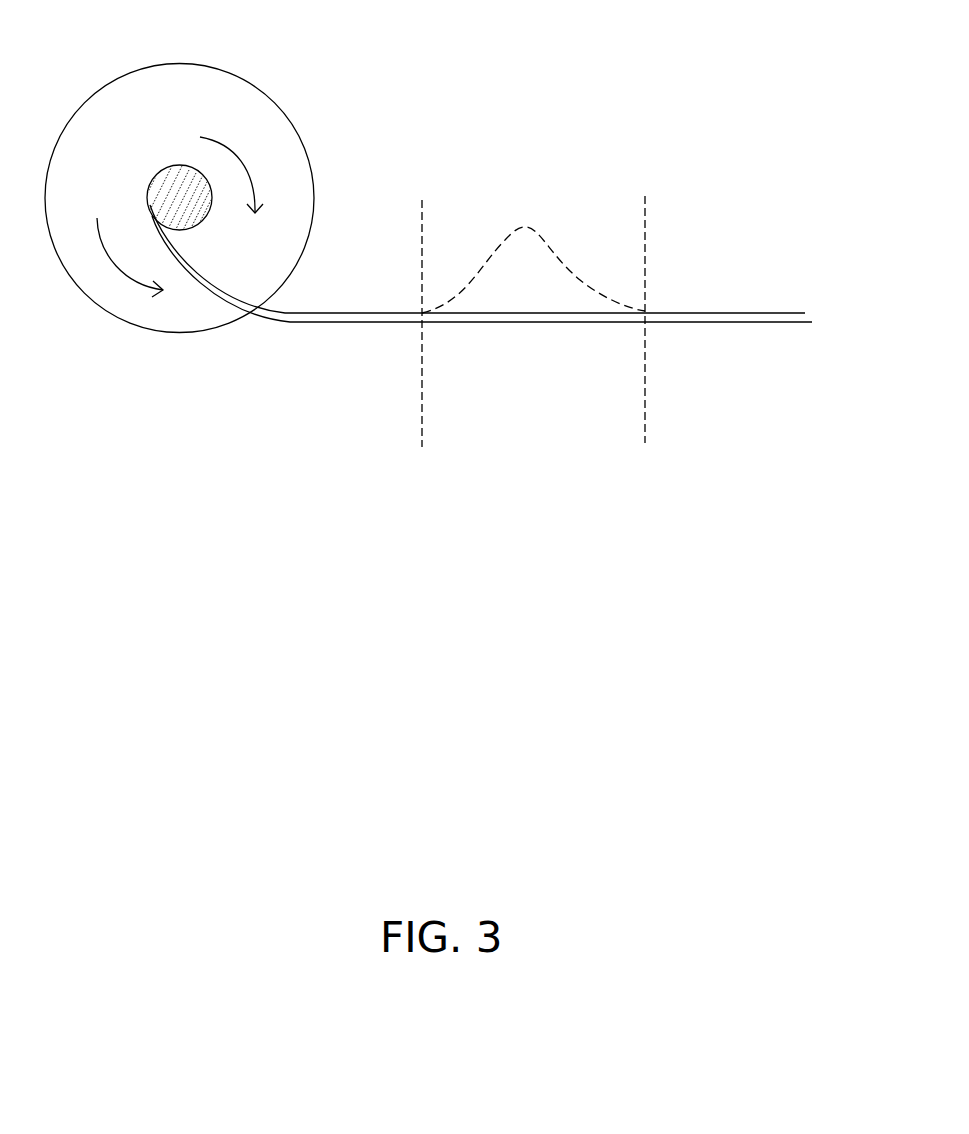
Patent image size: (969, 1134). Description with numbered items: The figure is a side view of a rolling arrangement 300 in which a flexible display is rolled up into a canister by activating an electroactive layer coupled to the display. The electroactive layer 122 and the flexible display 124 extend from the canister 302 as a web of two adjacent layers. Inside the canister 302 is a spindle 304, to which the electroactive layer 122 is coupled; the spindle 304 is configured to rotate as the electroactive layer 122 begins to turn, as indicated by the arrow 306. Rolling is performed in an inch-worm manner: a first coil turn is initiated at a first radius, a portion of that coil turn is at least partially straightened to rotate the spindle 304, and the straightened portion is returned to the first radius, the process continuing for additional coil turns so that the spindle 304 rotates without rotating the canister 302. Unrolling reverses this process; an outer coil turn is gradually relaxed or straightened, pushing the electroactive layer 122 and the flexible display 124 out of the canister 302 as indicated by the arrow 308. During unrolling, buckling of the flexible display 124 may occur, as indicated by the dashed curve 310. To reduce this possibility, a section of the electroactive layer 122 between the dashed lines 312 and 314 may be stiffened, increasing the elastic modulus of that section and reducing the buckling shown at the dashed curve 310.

The rolling system 300 is at (456, 903).
The canister 302 is at (121, 76).
The spindle 304 is at (157, 173).
The arrow 306 is at (242, 155).
The arrow 308 is at (108, 272).
The dashed curve 310 is at (646, 305).
The dashed line 312 is at (423, 308).
The dashed line 314 is at (553, 253).
The electroactive layer 122 is at (735, 312).
The flexible display 124 is at (755, 322).